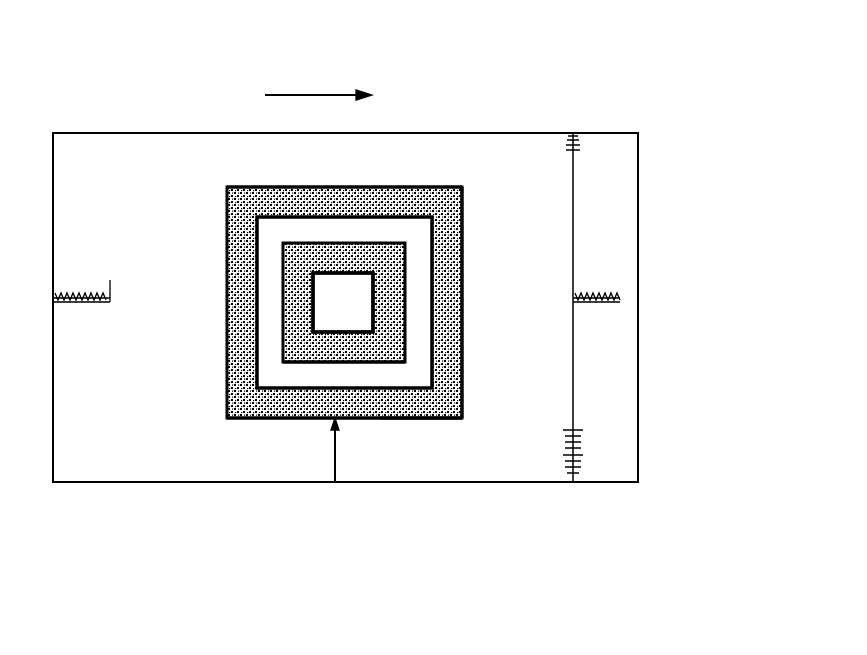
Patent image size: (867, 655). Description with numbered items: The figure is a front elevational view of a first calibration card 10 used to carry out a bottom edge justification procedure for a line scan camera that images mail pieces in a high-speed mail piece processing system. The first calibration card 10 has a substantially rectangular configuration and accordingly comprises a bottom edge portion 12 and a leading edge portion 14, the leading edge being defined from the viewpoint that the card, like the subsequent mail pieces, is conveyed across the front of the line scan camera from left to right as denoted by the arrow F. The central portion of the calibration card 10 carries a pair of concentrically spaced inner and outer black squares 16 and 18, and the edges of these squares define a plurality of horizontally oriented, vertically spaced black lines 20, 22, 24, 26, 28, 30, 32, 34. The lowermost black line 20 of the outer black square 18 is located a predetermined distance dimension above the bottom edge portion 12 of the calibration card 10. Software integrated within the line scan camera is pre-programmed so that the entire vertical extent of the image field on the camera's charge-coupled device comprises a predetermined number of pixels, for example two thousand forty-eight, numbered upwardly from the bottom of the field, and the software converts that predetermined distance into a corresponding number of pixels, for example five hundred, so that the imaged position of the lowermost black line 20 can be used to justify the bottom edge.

The first calibration card 10 is at (523, 118).
The bottom edge portion 12 is at (170, 484).
The leading edge portion 14 is at (640, 328).
The inner black square 16 is at (300, 372).
The outer black square 18 is at (463, 392).
The lowermost black line 20 is at (388, 420).
The black line 22 is at (280, 390).
The black line 24 is at (360, 362).
The black line 26 is at (347, 330).
The black line 28 is at (320, 296).
The black line 30 is at (383, 242).
The black line 32 is at (265, 238).
The black line 34 is at (288, 187).